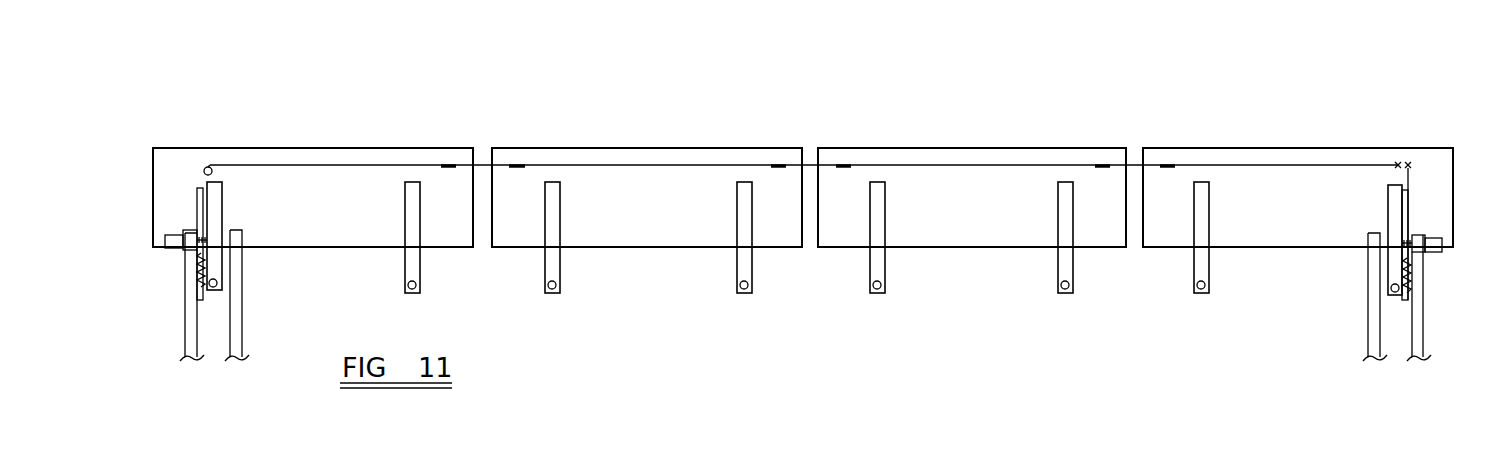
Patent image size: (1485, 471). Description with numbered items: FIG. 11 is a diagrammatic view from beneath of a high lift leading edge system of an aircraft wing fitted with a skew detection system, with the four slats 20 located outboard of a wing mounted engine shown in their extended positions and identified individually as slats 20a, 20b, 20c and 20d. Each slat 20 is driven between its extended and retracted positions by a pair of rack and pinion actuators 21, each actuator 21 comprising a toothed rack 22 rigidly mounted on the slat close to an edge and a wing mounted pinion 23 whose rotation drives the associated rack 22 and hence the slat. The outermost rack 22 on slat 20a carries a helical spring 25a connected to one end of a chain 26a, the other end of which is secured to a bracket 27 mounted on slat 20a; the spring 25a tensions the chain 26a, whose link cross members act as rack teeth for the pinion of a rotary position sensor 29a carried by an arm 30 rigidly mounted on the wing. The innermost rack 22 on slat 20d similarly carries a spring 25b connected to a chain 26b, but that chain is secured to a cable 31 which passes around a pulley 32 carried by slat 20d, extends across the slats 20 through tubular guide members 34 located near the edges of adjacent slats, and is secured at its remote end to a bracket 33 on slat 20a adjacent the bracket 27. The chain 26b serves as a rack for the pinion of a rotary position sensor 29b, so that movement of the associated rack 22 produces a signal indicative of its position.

The slat 20 is at (1165, 157).
The slat 20a is at (1265, 140).
The slat 20b is at (952, 140).
The slat 20c is at (690, 140).
The slat 20d is at (268, 140).
The rack and pinion actuator 21 is at (848, 265).
The toothed rack 22 is at (742, 265).
The pinion 23 is at (549, 289).
The helical spring 25a is at (1401, 275).
The spring 25b is at (206, 268).
The chain 26a is at (1403, 212).
The chain 26b is at (204, 202).
The bracket 27 is at (1408, 166).
The rotary position sensor 29a is at (1433, 252).
The rotary position sensor 29b is at (172, 236).
The arm 30 is at (195, 326).
The cable 31 is at (384, 164).
The pulley 32 is at (209, 166).
The bracket 33 is at (1394, 162).
The tubular guide member 34 is at (517, 163).